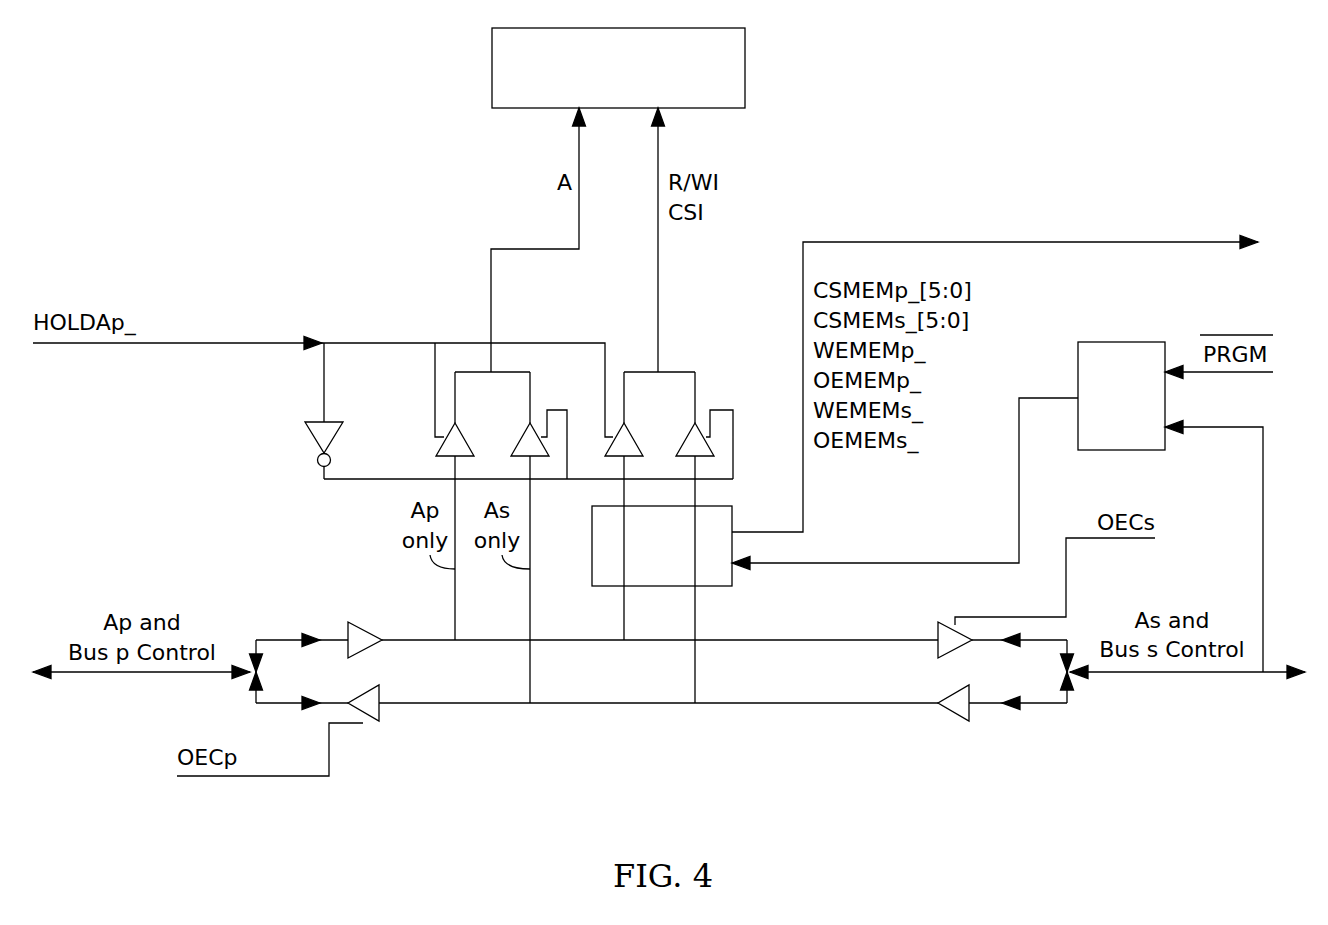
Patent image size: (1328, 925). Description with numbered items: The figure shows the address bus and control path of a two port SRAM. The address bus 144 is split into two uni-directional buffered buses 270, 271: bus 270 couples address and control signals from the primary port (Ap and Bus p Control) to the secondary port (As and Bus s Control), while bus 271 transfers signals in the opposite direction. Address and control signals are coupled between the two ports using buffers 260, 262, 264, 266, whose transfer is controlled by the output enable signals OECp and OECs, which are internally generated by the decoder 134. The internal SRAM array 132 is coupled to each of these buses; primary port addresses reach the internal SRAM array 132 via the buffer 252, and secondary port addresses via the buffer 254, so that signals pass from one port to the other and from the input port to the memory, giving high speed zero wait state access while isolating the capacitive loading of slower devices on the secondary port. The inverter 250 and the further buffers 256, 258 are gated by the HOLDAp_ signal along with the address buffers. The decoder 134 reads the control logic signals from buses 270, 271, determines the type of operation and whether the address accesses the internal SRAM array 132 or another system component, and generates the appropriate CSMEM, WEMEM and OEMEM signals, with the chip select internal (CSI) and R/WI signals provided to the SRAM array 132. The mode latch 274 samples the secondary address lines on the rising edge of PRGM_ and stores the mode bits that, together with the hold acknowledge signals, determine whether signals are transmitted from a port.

The internal SRAM array 132 is at (601, 98).
The decoder 134 is at (645, 574).
The address bus 144 is at (540, 740).
The inverter 250 is at (308, 433).
The buffer 252 is at (436, 440).
The buffer 254 is at (518, 440).
The tri-state buffer 256 is at (604, 448).
The tri-state buffer 258 is at (684, 440).
The buffer 260 is at (358, 628).
The buffer 262 is at (375, 715).
The buffer 264 is at (930, 650).
The buffer 266 is at (955, 717).
The uni-directional buffered bus 270 is at (778, 640).
The uni-directional buffered bus 271 is at (768, 703).
The mode latch 274 is at (1104, 440).